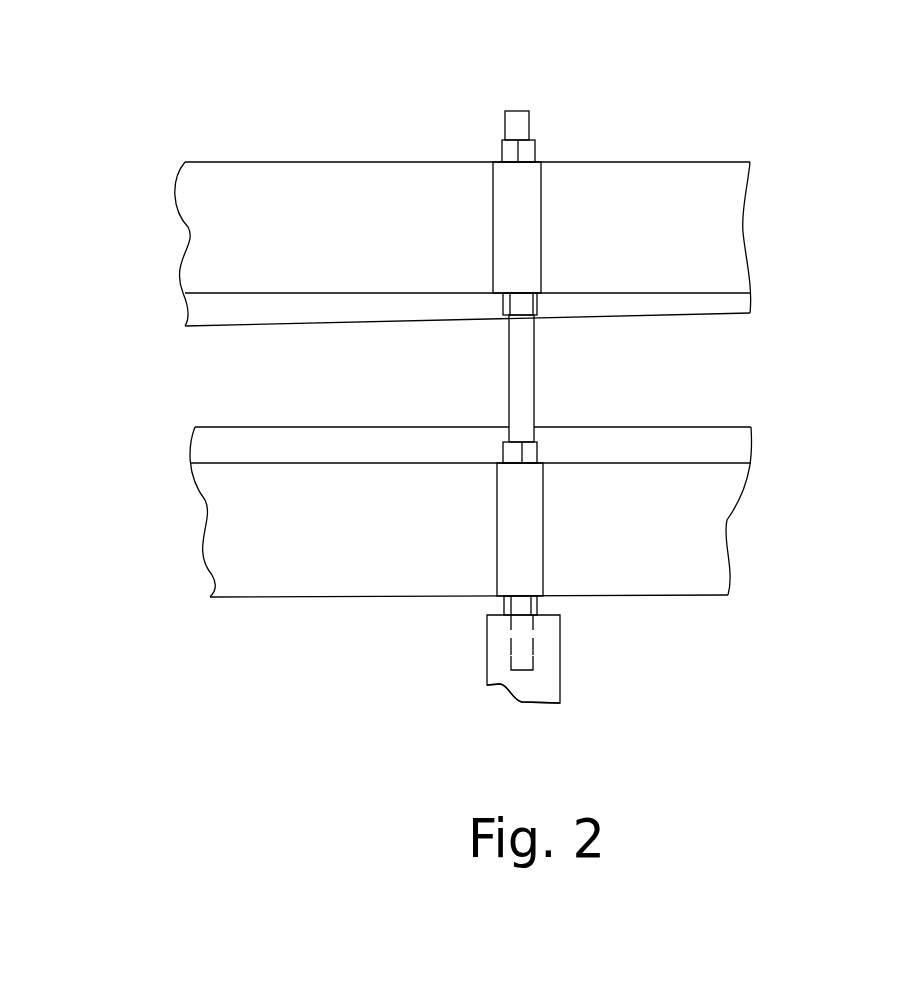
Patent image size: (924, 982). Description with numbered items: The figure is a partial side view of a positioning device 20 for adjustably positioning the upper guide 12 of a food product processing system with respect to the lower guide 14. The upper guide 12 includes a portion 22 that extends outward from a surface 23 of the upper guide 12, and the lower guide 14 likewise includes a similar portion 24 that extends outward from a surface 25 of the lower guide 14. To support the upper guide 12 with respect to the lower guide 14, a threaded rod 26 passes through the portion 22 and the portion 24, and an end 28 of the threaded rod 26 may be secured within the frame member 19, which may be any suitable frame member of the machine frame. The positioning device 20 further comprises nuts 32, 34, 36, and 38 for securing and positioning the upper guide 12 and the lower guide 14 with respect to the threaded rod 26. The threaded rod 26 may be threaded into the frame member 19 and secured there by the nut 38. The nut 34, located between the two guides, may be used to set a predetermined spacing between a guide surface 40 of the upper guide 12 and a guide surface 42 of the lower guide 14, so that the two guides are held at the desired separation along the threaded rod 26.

The upper guide 12 is at (723, 232).
The lower guide 14 is at (703, 527).
The second upright support member 19 is at (550, 683).
The positioning device 20 is at (541, 111).
The portion 22 is at (508, 187).
The surface 23 is at (650, 193).
The portion 24 is at (512, 487).
The surface 25 is at (652, 563).
The threaded rod 26 is at (523, 398).
The end 28 is at (510, 639).
The nut 32 is at (532, 150).
The nut 34 is at (522, 305).
The nut 36 is at (530, 453).
The nut 38 is at (523, 603).
The guide surface 40 is at (253, 327).
The guide surface 42 is at (277, 428).